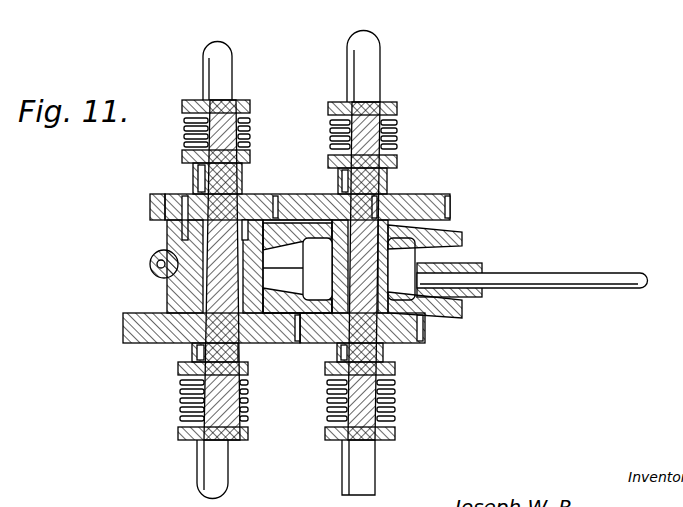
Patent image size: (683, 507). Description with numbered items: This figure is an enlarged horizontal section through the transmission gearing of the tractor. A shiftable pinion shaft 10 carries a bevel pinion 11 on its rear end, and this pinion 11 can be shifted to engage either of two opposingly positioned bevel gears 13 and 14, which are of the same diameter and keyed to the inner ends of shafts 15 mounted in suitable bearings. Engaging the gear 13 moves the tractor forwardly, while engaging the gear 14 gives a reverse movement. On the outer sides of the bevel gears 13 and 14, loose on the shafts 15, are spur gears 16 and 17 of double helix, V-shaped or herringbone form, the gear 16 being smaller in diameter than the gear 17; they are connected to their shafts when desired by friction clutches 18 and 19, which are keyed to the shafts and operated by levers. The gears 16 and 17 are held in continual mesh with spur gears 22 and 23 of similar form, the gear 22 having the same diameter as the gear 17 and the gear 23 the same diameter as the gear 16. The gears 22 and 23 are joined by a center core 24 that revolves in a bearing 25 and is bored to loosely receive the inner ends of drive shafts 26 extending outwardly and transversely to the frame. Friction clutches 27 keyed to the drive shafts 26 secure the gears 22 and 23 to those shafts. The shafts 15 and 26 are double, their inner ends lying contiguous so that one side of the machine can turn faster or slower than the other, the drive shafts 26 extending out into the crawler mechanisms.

The shiftable pinion shaft 10 is at (612, 270).
The bevel pinion 11 is at (470, 266).
The bevel gear 13 is at (448, 317).
The bevel gear 14 is at (448, 230).
The shaft 15 is at (388, 194).
The spur gear 16 is at (425, 342).
The spur gear 17 is at (440, 196).
The friction clutch 18 is at (397, 390).
The friction clutch 19 is at (392, 146).
The spur gear 22 is at (160, 344).
The spur gear 23 is at (157, 200).
The center core 24 is at (185, 285).
The bearing 25 is at (168, 237).
The drive shaft 26 is at (245, 190).
The friction clutch 27 is at (244, 150).